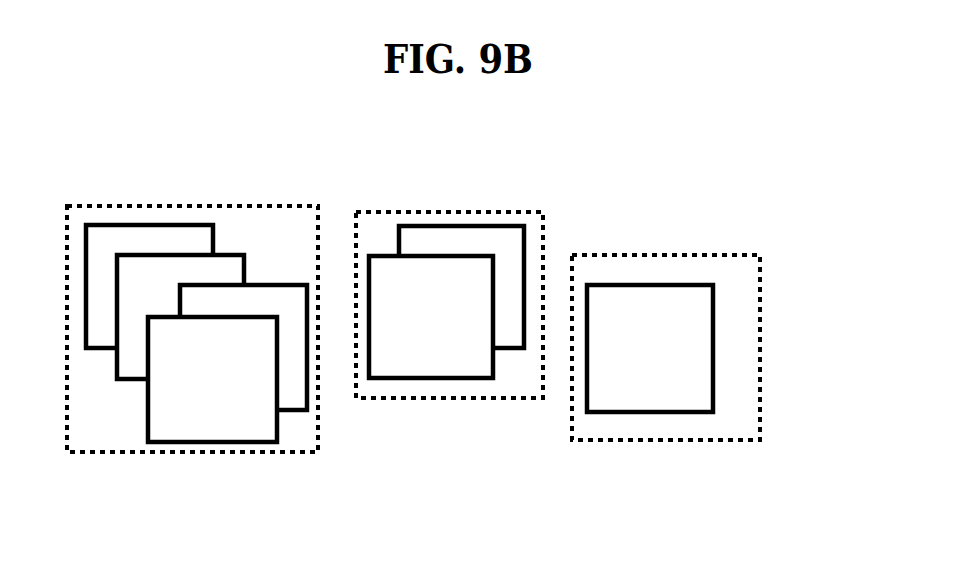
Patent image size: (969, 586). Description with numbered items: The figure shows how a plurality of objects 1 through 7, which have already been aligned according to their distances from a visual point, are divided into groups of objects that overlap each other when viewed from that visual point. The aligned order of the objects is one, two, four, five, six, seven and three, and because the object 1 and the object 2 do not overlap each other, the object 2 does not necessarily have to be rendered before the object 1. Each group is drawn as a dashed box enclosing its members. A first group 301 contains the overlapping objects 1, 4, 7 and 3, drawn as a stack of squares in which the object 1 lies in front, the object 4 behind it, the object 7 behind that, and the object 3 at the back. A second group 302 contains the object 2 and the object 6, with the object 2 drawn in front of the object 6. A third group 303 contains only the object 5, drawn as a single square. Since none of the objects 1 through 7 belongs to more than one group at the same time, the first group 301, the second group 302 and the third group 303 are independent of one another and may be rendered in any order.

The object 1 is at (212, 379).
The object 2 is at (431, 317).
The object 3 is at (147, 225).
The object 4 is at (300, 285).
The object 5 is at (650, 348).
The object 6 is at (485, 225).
The object 7 is at (117, 379).
The first group 301 is at (197, 453).
The second group 302 is at (450, 400).
The third group 303 is at (762, 347).